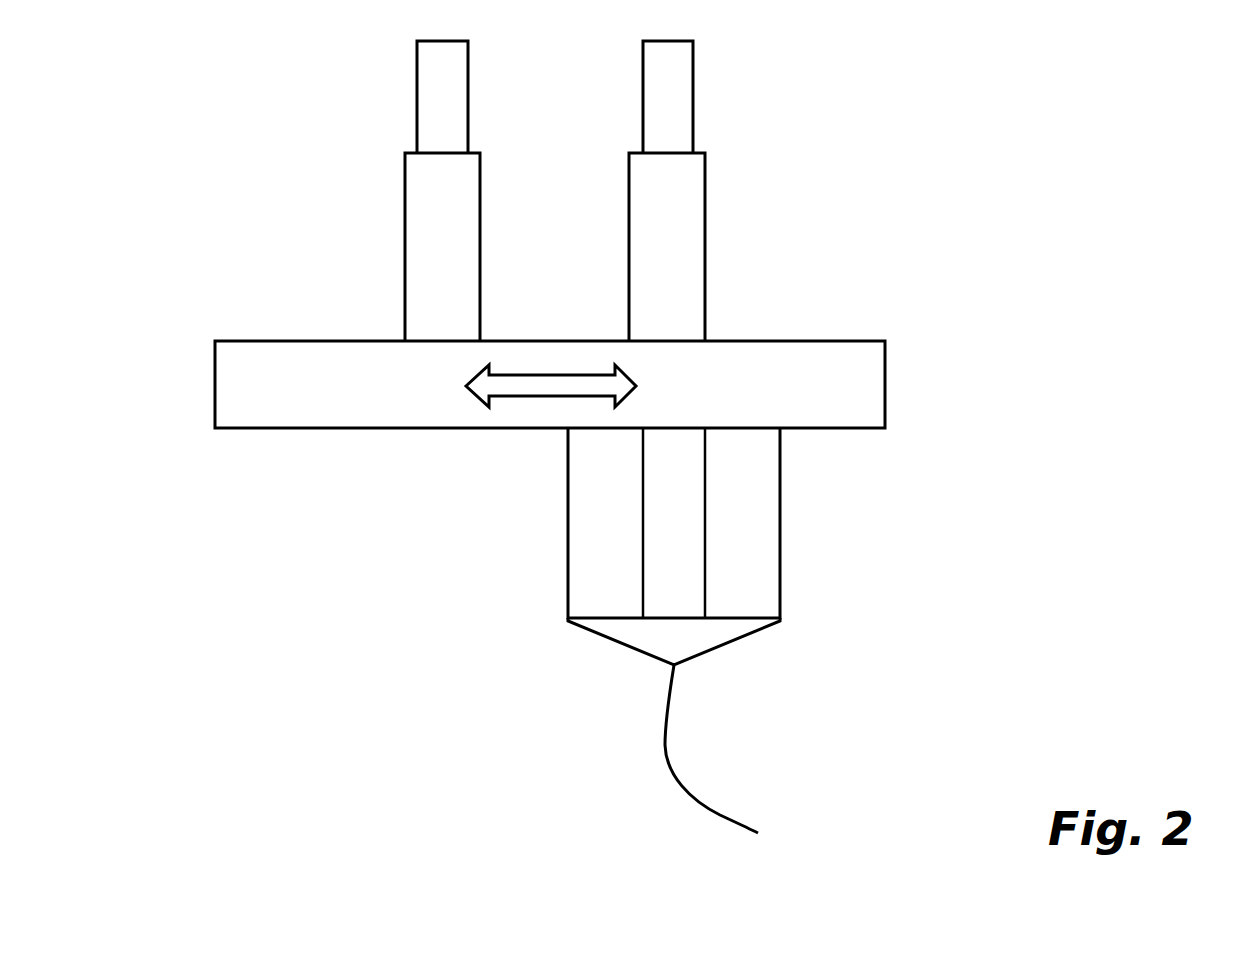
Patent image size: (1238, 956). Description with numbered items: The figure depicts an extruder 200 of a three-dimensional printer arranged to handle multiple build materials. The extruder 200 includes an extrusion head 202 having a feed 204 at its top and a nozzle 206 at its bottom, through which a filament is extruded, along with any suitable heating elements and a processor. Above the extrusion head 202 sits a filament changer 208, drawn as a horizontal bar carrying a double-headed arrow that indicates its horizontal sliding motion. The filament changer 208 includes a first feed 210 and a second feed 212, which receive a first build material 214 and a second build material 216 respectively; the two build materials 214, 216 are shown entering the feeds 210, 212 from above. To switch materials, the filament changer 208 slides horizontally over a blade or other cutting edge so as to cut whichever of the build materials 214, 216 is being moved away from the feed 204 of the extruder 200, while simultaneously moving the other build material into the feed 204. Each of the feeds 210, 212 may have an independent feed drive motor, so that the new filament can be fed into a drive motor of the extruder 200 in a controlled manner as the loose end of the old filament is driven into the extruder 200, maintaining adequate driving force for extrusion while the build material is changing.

The extruder 200 is at (284, 638).
The extrusion head 202 is at (567, 530).
The feed 204 is at (672, 443).
The nozzle 206 is at (670, 664).
The filament changer 208 is at (885, 390).
The first feed 210 is at (405, 265).
The second feed 212 is at (705, 270).
The first build material 214 is at (417, 106).
The second build material 216 is at (693, 101).